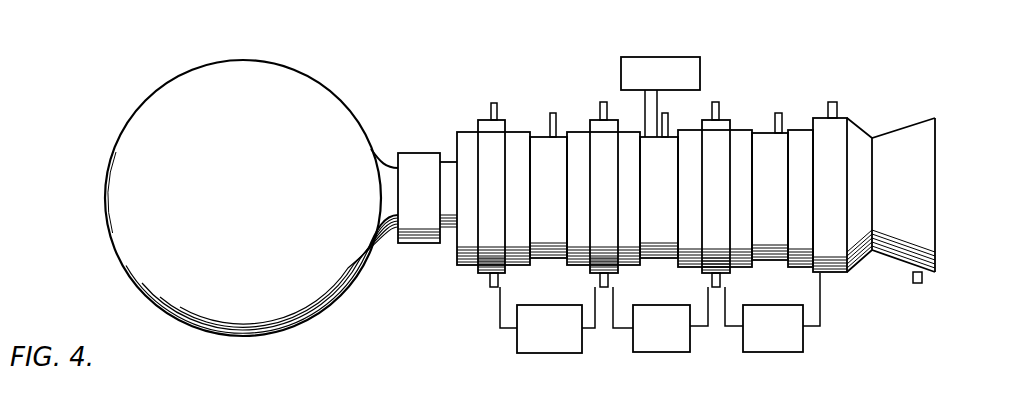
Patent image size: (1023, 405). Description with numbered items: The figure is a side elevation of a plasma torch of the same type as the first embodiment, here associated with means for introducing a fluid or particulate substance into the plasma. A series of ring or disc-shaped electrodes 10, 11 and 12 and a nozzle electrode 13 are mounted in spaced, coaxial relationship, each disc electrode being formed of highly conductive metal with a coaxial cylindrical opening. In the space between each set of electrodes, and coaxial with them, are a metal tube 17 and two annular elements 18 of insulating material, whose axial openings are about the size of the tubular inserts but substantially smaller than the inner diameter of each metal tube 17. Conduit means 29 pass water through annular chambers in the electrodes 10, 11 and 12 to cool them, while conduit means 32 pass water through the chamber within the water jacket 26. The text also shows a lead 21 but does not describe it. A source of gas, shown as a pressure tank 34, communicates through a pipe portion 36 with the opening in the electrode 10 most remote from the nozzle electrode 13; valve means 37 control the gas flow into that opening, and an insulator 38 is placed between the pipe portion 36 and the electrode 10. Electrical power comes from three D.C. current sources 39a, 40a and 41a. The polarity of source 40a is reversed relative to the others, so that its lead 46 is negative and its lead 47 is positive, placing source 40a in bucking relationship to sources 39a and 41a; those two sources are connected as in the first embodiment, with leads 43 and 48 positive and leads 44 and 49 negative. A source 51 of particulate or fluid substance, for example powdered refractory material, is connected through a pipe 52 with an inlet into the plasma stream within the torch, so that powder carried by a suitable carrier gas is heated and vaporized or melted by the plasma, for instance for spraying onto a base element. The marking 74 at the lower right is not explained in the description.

The electrode 10 is at (481, 112).
The electrode 11 is at (638, 108).
The electrode 12 is at (728, 115).
The nozzle electrode 13 is at (871, 126).
The metal tube 17 is at (547, 250).
The annular element 18 is at (518, 130).
The lead 21 is at (553, 113).
The water jacket 26 is at (920, 192).
The conduit means 29 is at (494, 104).
The conduit means 32 is at (834, 101).
The pressure tank 34 is at (260, 341).
The pipe portion 36 is at (451, 234).
The valve means 37 is at (404, 157).
The insulator 38 is at (464, 132).
The D.C. current source 39a is at (545, 355).
The D.C. current source 40a is at (684, 353).
The D.C. current source 41a is at (777, 353).
The lead 43 is at (500, 322).
The lead 44 is at (598, 336).
The lead 46 is at (623, 352).
The lead 47 is at (706, 352).
The lead 48 is at (723, 352).
The lead 49 is at (826, 316).
The source of particulate or fluid substance 51 is at (651, 56).
The pipe 52 is at (656, 138).
The sheet marking 74 is at (929, 390).